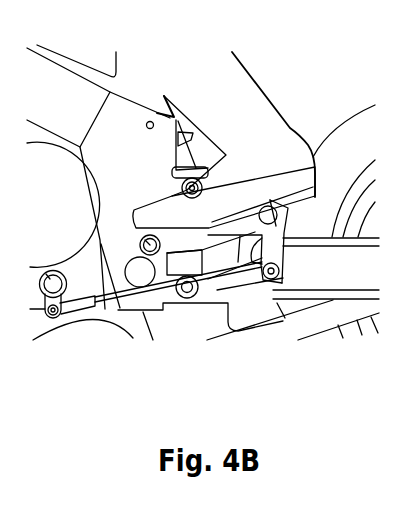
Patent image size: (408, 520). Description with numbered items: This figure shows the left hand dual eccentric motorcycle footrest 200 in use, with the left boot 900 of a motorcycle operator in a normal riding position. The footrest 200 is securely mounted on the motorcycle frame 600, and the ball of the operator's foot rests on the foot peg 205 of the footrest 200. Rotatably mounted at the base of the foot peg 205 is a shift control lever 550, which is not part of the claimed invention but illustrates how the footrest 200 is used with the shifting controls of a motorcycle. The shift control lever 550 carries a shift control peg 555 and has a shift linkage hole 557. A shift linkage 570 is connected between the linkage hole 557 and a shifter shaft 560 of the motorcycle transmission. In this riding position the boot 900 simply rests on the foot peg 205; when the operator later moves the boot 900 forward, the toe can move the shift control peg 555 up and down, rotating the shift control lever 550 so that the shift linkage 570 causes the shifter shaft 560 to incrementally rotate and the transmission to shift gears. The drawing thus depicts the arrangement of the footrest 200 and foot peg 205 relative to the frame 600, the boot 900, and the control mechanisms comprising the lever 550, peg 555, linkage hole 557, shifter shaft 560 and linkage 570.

The motorcycle frame 600 is at (132, 150).
The left boot 900 is at (258, 118).
The shift control peg 555 is at (136, 238).
The shifter shaft 560 is at (50, 279).
The shift linkage 570 is at (105, 309).
The left hand dual eccentric motorcycle footrest 200 is at (240, 248).
The foot peg 205 is at (277, 215).
The shift linkage hole 557 is at (272, 279).
The shift control lever 550 is at (206, 236).